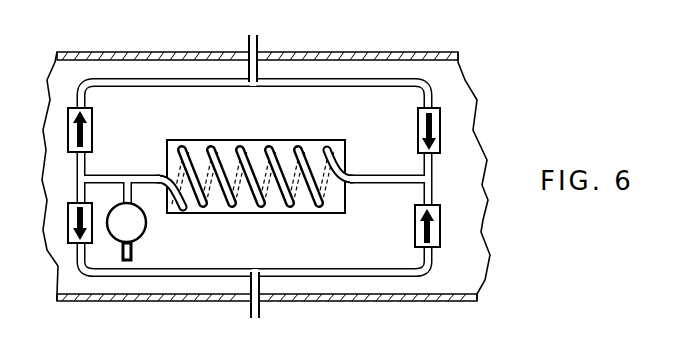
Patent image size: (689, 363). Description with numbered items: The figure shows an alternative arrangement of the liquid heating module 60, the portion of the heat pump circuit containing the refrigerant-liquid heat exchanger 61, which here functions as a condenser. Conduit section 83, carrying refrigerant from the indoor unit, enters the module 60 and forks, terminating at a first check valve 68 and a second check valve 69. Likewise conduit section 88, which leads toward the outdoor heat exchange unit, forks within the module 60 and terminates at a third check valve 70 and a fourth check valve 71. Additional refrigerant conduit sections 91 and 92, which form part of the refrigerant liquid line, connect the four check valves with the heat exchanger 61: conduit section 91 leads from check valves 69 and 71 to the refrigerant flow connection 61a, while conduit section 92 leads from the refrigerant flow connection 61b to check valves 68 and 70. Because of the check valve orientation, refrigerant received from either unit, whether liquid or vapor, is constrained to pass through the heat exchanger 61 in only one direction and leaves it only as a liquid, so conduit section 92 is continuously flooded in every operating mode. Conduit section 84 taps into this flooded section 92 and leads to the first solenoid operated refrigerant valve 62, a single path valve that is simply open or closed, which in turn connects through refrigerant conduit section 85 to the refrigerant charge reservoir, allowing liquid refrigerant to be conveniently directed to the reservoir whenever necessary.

The liquid heating module 60 is at (385, 53).
The refrigerant-liquid heat exchanger 61 is at (200, 140).
The refrigerant flow connection 61a is at (182, 208).
The refrigerant flow connection 61b is at (334, 152).
The first solenoid operated refrigerant valve 62 is at (143, 237).
The first check valve 68 is at (92, 130).
The second check valve 69 is at (418, 118).
The third check valve 70 is at (80, 250).
The fourth check valve 71 is at (415, 225).
The conduit section 83 is at (259, 44).
The conduit section 84 is at (123, 193).
The refrigerant conduit section 85 is at (123, 252).
The refrigerant conduit section 88 is at (261, 315).
The refrigerant conduit section 91 is at (433, 190).
The refrigerant conduit section 92 is at (77, 178).